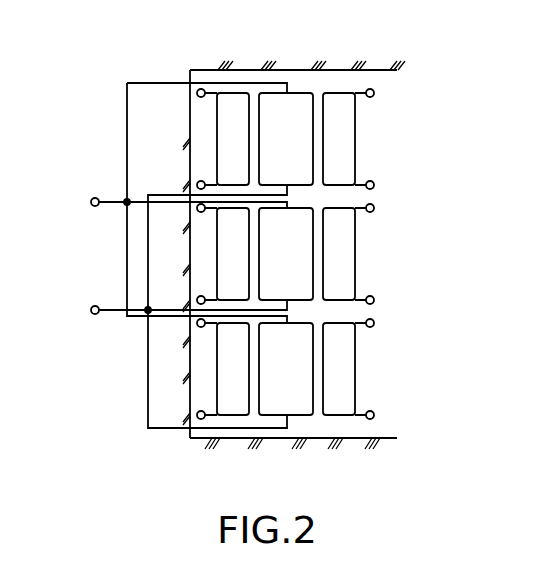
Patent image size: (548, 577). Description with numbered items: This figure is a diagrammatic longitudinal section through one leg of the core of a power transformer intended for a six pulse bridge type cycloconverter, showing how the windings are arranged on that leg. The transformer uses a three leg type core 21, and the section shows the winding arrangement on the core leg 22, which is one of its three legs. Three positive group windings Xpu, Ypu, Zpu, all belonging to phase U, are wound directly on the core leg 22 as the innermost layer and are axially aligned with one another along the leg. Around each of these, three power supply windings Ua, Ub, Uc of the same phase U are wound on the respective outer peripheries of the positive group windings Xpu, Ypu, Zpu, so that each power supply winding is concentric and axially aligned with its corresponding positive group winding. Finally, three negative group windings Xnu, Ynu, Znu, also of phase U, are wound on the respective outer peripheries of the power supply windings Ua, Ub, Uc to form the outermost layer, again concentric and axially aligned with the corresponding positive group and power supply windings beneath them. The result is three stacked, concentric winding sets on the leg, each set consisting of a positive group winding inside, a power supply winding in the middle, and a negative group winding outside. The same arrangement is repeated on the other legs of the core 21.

The three leg type core 21 is at (294, 228).
The core leg 22 is at (178, 350).
The power supply winding Ua is at (286, 139).
The power supply winding Ub is at (286, 254).
The power supply winding Uc is at (286, 369).
The positive group winding Xpu is at (222, 118).
The positive group winding Ypu is at (223, 247).
The positive group winding Zpu is at (225, 390).
The negative group winding Xnu is at (346, 130).
The negative group winding Ynu is at (346, 256).
The negative group winding Znu is at (346, 367).